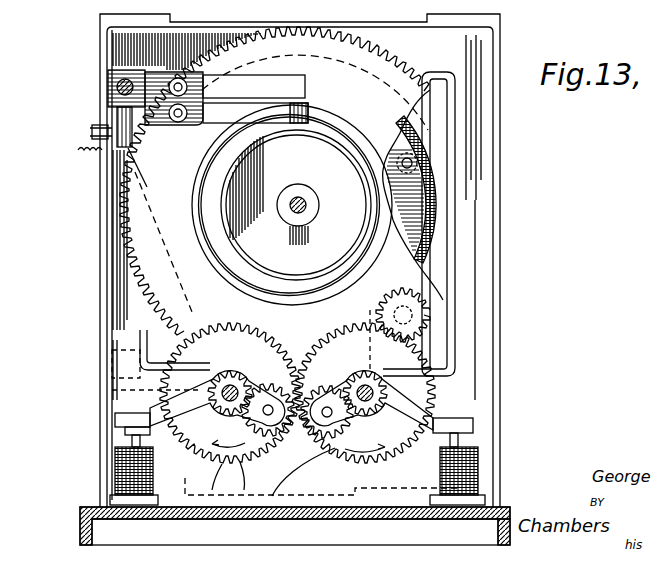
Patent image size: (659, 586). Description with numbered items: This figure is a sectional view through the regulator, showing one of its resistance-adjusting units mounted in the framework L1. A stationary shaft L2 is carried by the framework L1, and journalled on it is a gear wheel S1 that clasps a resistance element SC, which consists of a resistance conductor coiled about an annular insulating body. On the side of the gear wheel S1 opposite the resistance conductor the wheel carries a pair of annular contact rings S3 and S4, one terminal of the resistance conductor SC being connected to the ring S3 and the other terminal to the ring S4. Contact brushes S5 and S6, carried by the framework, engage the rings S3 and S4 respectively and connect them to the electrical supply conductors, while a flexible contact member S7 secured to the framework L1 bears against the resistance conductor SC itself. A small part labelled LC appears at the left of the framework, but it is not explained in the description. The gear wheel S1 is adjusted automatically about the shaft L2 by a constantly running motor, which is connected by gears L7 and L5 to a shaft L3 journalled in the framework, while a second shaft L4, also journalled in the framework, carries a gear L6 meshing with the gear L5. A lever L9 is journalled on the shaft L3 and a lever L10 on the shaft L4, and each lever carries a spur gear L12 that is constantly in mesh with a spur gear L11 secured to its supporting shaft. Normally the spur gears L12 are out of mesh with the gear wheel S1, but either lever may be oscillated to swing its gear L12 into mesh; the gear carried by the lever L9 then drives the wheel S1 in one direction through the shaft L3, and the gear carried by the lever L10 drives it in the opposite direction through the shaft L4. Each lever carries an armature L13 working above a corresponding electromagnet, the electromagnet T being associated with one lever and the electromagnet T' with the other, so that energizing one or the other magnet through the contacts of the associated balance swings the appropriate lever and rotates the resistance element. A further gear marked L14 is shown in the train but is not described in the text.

The framework L1 is at (480, 170).
The gear wheel S1 is at (281, 181).
The annular contact ring S3 is at (203, 213).
The stationary shaft L2 is at (308, 200).
The resistance element SC is at (413, 160).
The contact brush S6 is at (212, 88).
The contact brush S5 is at (274, 113).
The annular contact ring S4 is at (192, 160).
The flexible contact member S7 is at (128, 150).
The clip LC is at (78, 150).
The shaft L3 is at (410, 392).
The gear L6 is at (190, 356).
The gear L7 is at (417, 298).
The lever L10 is at (198, 428).
The lever L9 is at (435, 422).
The spur gear L11 is at (245, 375).
The second shaft L4 is at (150, 408).
The gear L5 is at (410, 353).
The pinion L14 is at (318, 392).
The spur gear L12 is at (226, 455).
The armature L13 is at (115, 433).
The electromagnet T is at (109, 476).
The electromagnet T' is at (482, 476).